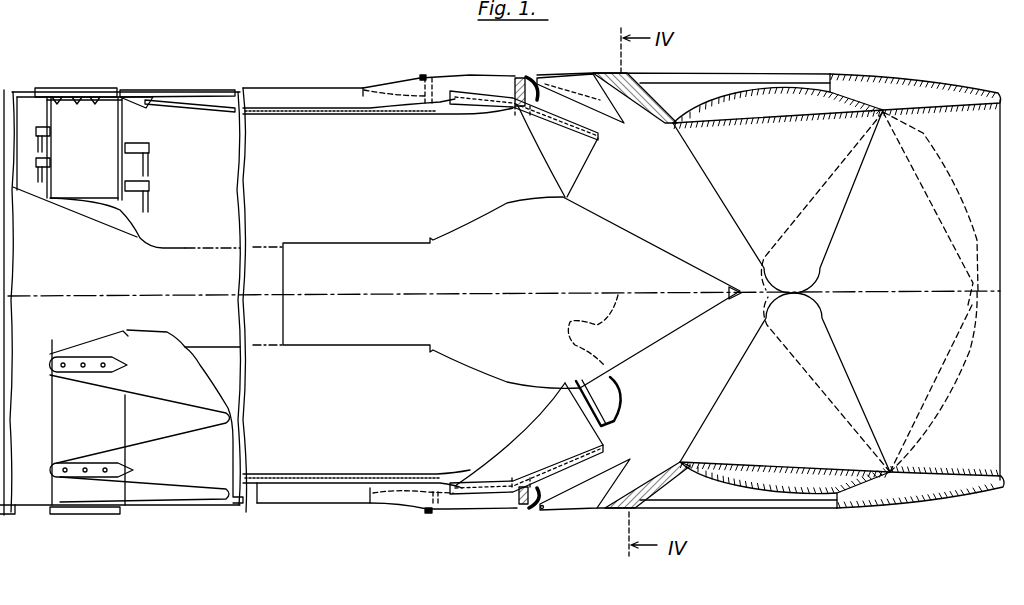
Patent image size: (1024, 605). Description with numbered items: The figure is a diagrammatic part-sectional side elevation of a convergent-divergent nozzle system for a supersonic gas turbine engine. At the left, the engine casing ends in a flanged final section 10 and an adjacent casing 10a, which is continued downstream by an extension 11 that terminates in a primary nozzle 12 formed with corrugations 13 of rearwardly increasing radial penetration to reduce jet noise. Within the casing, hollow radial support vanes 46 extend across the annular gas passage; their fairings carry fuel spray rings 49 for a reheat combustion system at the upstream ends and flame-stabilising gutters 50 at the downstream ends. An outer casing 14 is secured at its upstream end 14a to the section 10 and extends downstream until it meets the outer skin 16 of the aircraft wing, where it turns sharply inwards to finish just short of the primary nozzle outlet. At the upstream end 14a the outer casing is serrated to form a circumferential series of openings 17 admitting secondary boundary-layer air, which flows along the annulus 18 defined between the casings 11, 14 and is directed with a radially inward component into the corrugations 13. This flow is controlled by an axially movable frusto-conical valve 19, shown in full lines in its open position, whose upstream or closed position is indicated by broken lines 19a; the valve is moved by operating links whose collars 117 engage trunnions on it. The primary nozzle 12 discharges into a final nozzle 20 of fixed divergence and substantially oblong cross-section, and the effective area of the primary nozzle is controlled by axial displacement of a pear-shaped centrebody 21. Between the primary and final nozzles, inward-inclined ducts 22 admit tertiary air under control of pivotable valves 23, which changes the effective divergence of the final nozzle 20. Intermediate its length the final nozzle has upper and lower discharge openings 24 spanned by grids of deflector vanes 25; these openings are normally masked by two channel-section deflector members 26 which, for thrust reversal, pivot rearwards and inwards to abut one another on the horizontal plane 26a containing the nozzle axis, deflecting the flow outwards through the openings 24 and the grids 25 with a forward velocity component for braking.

The flanged final section of engine casing 10 is at (22, 92).
The adjacent casing 10a is at (90, 89).
The upstream end of outer casing 14a is at (178, 89).
The hollow radial support vanes 46 is at (69, 148).
The fuel spray rings 49 is at (45, 129).
The flame-stabilising gutters 50 is at (146, 147).
The openings 17 is at (140, 439).
The extension 11 is at (279, 106).
The annulus 18 is at (322, 95).
The closed position of valve (broken lines) 19a is at (397, 88).
The outer casing 14 is at (438, 77).
The frusto-conical valve 19 is at (466, 93).
The outer skin of aircraft wing 16 is at (525, 77).
The collars 117 is at (517, 106).
The pivotable valves 23 is at (562, 77).
The inward-inclined ducts 22 is at (553, 83).
The discharge openings 24 is at (709, 73).
The grids of deflector vanes 25 is at (749, 75).
The channel-section deflector members 26 is at (781, 291).
The horizontal plane 26a is at (913, 290).
The final nozzle 20 is at (1000, 297).
The centrebody 21 is at (512, 292).
The primary nozzle 12 is at (590, 340).
The corrugations 13 is at (540, 312).